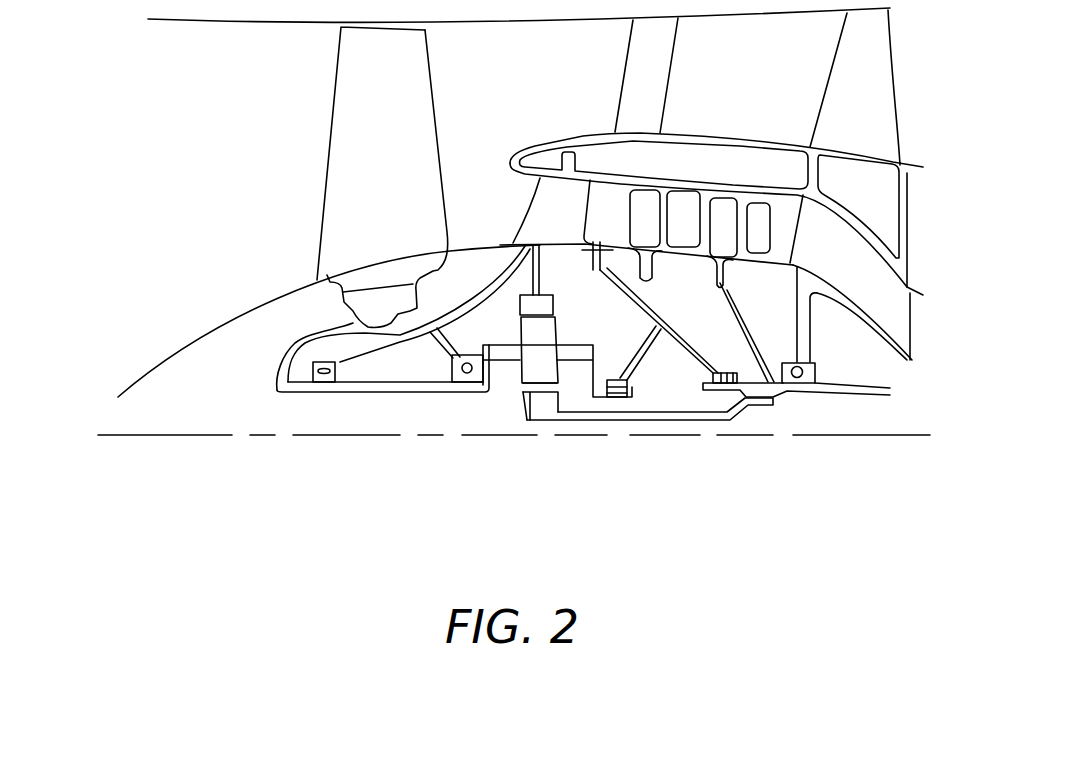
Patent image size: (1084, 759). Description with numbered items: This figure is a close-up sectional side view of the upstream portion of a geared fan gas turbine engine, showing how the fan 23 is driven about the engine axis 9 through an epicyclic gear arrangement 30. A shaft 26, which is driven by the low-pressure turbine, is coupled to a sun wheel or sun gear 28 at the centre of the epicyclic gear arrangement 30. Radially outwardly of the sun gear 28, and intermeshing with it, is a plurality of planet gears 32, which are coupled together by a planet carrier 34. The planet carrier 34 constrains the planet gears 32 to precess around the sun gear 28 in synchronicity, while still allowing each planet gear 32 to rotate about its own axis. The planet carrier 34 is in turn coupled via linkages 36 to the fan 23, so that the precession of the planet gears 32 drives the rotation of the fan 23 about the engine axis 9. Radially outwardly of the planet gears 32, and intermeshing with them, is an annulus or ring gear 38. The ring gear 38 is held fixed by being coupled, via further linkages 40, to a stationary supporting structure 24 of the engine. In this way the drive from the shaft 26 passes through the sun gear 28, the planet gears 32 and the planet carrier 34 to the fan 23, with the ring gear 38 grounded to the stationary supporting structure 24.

The engine axis 9 is at (212, 437).
The fan 23 is at (357, 153).
The stationary supporting structure 24 is at (543, 203).
The shaft 26 is at (788, 393).
The sun gear 28 is at (542, 403).
The epicyclic gear arrangement 30 is at (508, 385).
The planet gears 32 is at (530, 375).
The planet carrier 34 is at (590, 377).
The linkages 36 is at (497, 383).
The ring gear 38 is at (552, 305).
The linkages 40 is at (542, 275).